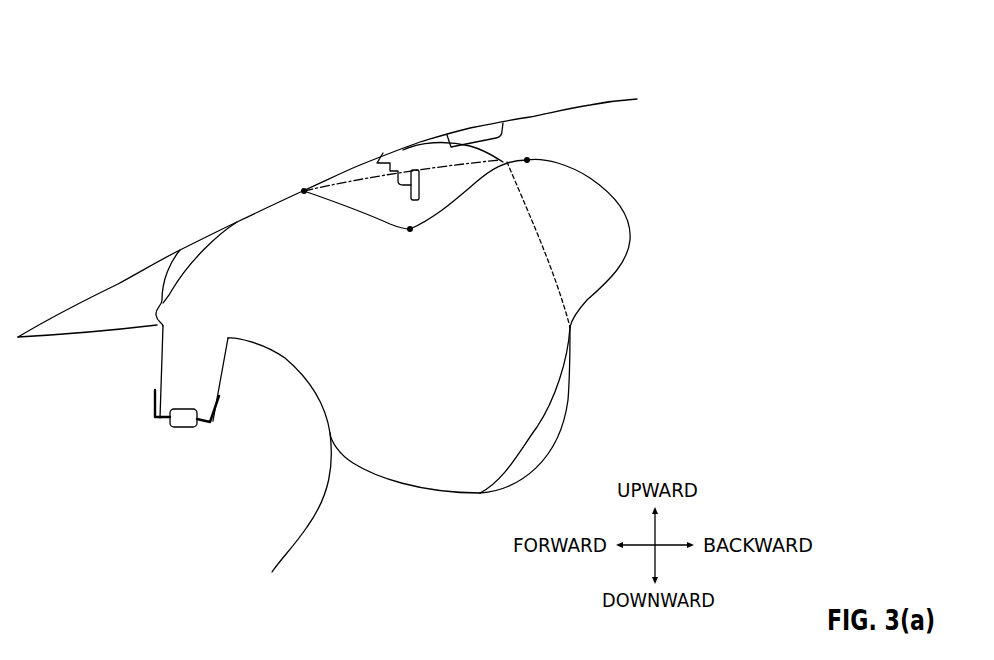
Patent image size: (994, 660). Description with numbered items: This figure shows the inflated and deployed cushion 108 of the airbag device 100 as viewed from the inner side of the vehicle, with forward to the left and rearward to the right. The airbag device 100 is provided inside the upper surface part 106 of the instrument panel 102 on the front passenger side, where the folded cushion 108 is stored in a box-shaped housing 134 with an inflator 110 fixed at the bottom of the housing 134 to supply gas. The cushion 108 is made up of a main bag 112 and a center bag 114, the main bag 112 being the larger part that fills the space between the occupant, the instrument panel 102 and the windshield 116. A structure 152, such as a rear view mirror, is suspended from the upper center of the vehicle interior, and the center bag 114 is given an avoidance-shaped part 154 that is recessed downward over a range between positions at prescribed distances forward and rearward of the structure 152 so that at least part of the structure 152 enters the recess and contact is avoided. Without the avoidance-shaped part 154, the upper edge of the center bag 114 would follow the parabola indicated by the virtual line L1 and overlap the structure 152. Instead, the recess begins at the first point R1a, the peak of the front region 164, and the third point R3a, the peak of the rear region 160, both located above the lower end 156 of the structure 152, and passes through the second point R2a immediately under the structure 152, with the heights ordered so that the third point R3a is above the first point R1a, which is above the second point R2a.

The airbag device 100 is at (161, 138).
The instrument panel 102 is at (303, 533).
The upper surface part 106 is at (247, 338).
The cushion 108 is at (488, 140).
The inflator 110 is at (183, 428).
The main bag 112 is at (500, 155).
The center bag 114 is at (547, 158).
The windshield 116 is at (118, 283).
The housing 134 is at (217, 416).
The structure 152 is at (416, 168).
The avoidance-shaped part 154 is at (360, 207).
The lower end 156 is at (417, 200).
The rear region 160 is at (600, 190).
The front region 164 is at (270, 225).
The first point R1a is at (303, 189).
The second point R2a is at (412, 232).
The third point R3a is at (528, 158).
The virtual line L1 is at (368, 175).